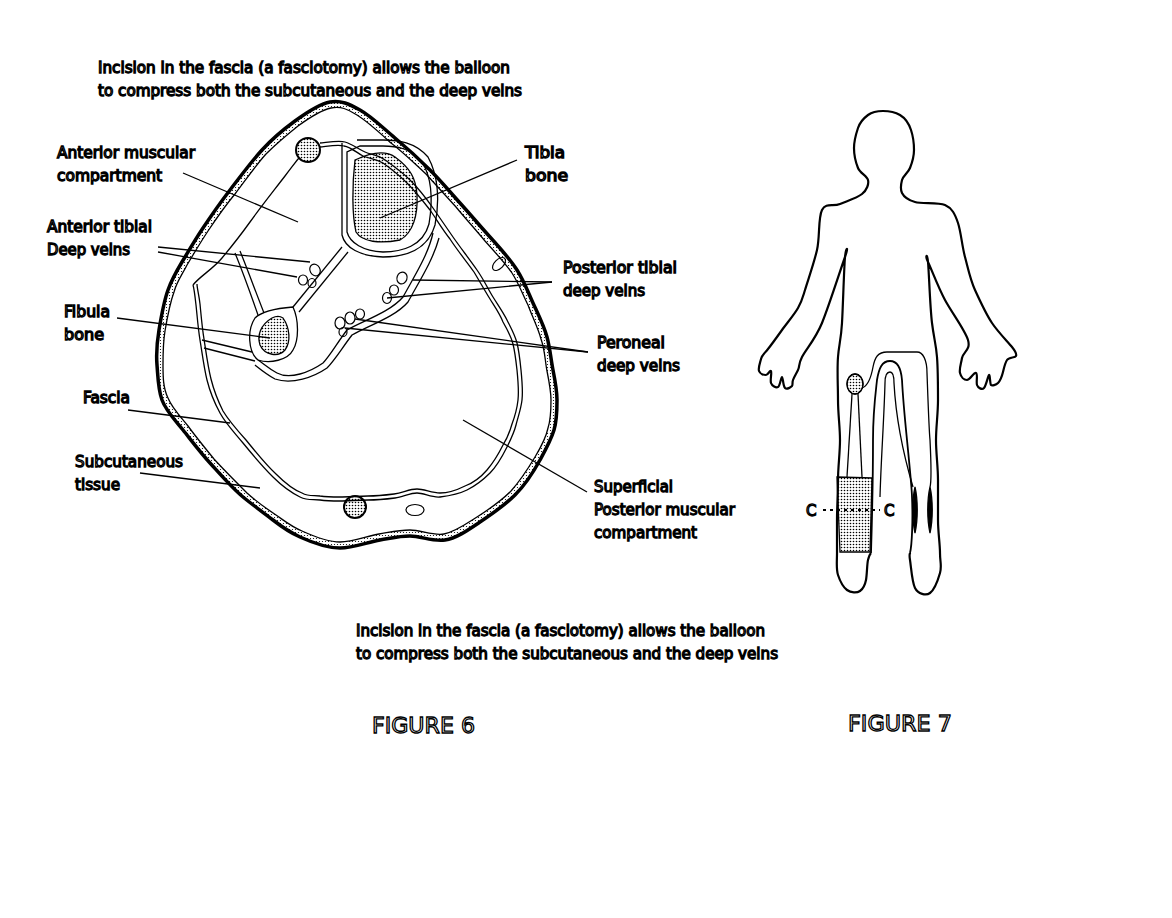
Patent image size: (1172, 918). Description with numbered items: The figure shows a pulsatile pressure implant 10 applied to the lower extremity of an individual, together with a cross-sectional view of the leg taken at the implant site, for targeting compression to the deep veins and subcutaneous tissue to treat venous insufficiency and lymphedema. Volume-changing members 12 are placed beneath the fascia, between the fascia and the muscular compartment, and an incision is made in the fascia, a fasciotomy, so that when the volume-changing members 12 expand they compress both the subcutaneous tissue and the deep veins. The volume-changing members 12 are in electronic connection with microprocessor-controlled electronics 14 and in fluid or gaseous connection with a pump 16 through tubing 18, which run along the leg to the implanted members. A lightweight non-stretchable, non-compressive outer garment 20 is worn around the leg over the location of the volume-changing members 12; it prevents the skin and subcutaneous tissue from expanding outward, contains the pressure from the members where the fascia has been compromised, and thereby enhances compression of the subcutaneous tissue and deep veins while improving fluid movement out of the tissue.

In FIG. 6, the pulsatile pressure implant 10 is at (530, 112).
In FIG. 7, the pulsatile pressure implant 10 is at (1020, 327).
In FIG. 6, the volume-changing member 12 is at (295, 143).
In FIG. 7, the volume-changing member 12 is at (917, 510).
In FIG. 7, the microprocessor-controlled electronics 14 is at (848, 389).
In FIG. 7, the pump 16 is at (848, 389).
In FIG. 7, the tubing 18 is at (909, 438).
In FIG. 6, the outer garment 20 is at (266, 522).
In FIG. 7, the outer garment 20 is at (852, 530).